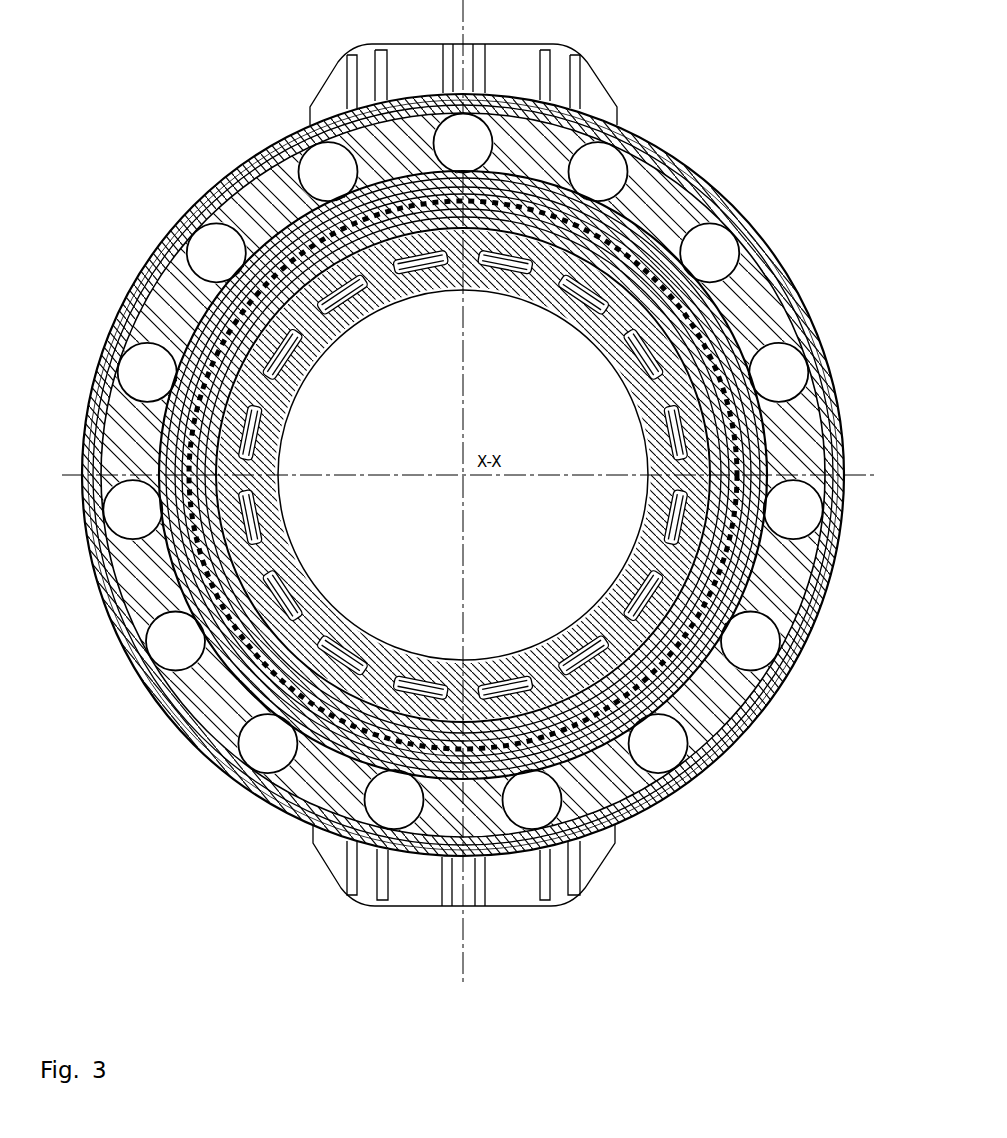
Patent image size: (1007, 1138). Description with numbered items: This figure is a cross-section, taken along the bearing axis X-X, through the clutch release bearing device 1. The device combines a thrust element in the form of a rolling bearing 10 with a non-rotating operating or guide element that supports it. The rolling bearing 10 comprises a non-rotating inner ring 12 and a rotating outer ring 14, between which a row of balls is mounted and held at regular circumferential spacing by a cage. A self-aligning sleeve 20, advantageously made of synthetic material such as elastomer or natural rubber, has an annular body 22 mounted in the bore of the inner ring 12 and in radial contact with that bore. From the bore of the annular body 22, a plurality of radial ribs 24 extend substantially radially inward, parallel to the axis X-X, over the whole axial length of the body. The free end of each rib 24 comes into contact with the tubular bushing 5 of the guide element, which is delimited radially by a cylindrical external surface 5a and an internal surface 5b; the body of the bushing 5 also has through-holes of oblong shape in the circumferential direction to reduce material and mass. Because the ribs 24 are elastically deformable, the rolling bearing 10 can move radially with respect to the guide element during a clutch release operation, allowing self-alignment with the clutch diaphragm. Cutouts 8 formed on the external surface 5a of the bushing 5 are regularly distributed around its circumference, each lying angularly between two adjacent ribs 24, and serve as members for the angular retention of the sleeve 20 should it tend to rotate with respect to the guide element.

The clutch release bearing device 1 is at (652, 78).
The bushing 5 is at (210, 692).
The external surface 5a is at (273, 786).
The internal surface 5b is at (223, 580).
The cutouts 8 is at (793, 326).
The rolling bearing 10 is at (717, 187).
The inner ring 12 is at (733, 300).
The outer ring 14 is at (660, 173).
The self-aligning sleeve 20 is at (780, 420).
The annular body 22 is at (775, 455).
The radial ribs 24 is at (807, 572).